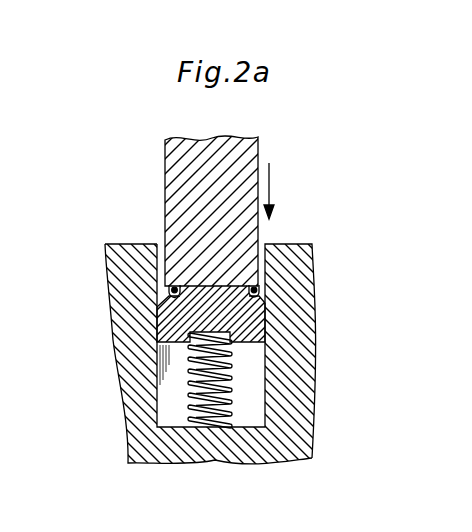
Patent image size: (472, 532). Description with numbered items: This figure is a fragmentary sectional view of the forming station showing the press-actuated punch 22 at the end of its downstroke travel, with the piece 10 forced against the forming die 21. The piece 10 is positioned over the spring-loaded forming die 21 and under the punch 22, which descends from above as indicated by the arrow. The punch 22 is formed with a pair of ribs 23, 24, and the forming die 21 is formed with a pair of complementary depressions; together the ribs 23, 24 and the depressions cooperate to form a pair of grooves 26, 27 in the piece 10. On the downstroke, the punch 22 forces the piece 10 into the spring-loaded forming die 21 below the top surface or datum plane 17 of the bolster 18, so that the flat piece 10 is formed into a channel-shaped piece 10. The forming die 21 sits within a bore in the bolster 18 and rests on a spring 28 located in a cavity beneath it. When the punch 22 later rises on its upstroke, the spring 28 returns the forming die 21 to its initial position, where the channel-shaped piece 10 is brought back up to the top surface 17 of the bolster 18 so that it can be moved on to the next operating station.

The piece 10 is at (267, 265).
The top surface or datum plane 17 is at (125, 243).
The bolster 18 is at (129, 387).
The forming die 21 is at (240, 318).
The press actuated punch 22 is at (178, 176).
The rib 23 is at (172, 289).
The rib 24 is at (257, 290).
The groove 26 is at (165, 301).
The groove 27 is at (265, 312).
The spring 28 is at (213, 427).